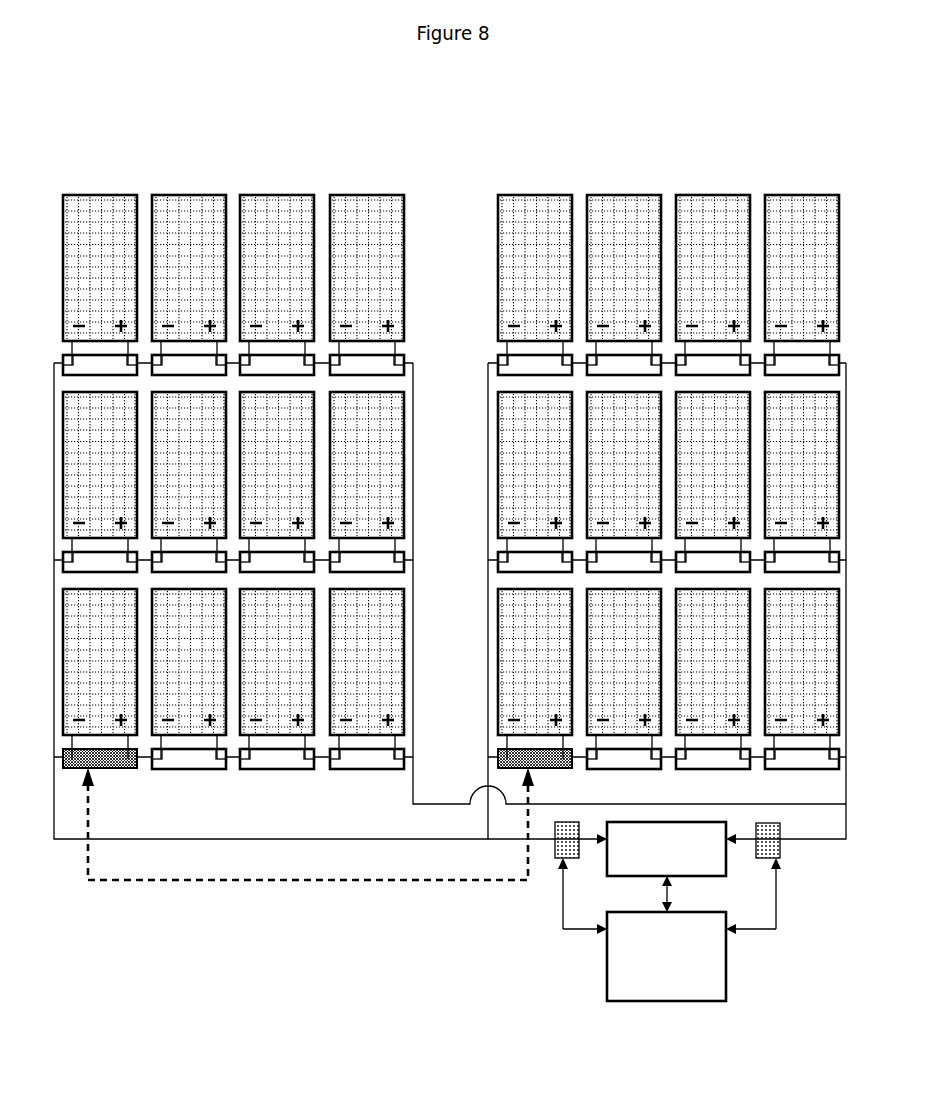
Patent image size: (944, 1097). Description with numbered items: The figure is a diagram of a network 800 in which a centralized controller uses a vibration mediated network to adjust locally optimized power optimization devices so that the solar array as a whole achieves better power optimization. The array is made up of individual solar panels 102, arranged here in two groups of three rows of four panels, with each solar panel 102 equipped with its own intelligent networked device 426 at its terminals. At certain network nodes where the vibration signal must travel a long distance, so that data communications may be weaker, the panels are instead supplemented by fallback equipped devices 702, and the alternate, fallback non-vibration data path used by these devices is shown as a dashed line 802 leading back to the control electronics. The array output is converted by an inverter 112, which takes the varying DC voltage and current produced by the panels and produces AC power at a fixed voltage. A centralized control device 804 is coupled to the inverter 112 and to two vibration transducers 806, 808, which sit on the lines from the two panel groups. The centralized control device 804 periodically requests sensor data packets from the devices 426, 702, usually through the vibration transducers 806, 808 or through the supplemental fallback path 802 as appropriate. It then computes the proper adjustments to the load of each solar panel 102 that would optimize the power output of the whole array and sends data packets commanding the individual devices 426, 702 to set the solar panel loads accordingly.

The network of the invention 800 is at (368, 124).
The solar panel 102 is at (118, 188).
The intelligent networked device 426 is at (410, 355).
The fallback equipped device 702 is at (107, 783).
The fallback data path 802 is at (290, 898).
The inverter 112 is at (666, 849).
The centralized control device 804 is at (597, 965).
The vibration transducer 806 is at (787, 858).
The vibration transducer 808 is at (555, 862).